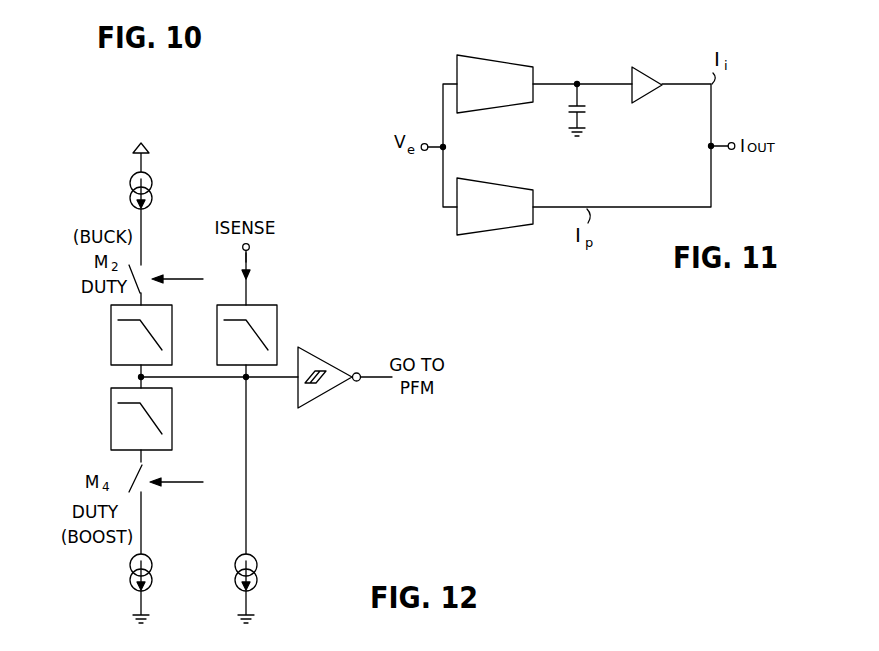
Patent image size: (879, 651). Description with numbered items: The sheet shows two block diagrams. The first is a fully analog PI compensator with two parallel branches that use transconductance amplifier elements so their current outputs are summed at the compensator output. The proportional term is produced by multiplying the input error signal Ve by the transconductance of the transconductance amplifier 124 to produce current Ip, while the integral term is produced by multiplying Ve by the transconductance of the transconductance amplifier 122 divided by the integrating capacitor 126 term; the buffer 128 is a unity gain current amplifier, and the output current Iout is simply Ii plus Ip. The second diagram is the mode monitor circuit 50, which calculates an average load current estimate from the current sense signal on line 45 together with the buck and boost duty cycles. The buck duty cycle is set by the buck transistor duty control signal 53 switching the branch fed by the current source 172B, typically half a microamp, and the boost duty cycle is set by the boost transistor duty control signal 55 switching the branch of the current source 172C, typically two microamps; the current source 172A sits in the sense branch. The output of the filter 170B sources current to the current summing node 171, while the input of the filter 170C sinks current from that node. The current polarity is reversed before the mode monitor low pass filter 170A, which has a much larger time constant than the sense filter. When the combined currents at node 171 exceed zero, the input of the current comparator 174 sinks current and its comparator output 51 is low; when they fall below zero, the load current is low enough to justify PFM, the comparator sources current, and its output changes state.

In FIG. 11, the transconductance amplifier 122 is at (500, 58).
In FIG. 11, the transconductance amplifier 124 is at (500, 181).
In FIG. 11, the integrating capacitor 126 is at (586, 118).
In FIG. 11, the buffer 128 is at (628, 78).
In FIG. 12, the current source 172B is at (146, 174).
In FIG. 12, the M2 duty control signal 53 is at (177, 278).
In FIG. 12, the line 45 is at (249, 253).
In FIG. 12, the mode monitor low pass filter 170A is at (278, 310).
In FIG. 12, the filter 170B is at (111, 322).
In FIG. 12, the filter 170C is at (111, 416).
In FIG. 12, the current summing node 171 is at (203, 378).
In FIG. 12, the current comparator 174 is at (313, 348).
In FIG. 12, the comparator output 51 is at (362, 380).
In FIG. 12, the M4 duty control signal 55 is at (187, 482).
In FIG. 12, the current source 172C is at (151, 553).
In FIG. 12, the current source 172A is at (256, 553).
In FIG. 12, the mode monitor circuit 50 is at (323, 450).